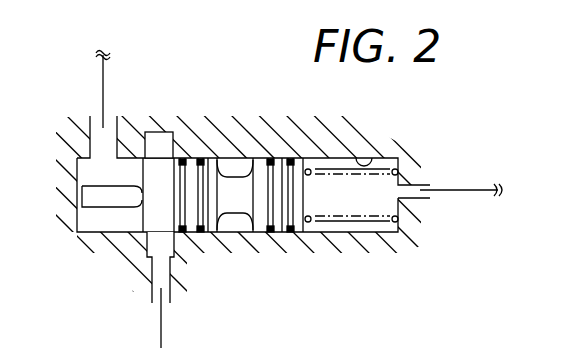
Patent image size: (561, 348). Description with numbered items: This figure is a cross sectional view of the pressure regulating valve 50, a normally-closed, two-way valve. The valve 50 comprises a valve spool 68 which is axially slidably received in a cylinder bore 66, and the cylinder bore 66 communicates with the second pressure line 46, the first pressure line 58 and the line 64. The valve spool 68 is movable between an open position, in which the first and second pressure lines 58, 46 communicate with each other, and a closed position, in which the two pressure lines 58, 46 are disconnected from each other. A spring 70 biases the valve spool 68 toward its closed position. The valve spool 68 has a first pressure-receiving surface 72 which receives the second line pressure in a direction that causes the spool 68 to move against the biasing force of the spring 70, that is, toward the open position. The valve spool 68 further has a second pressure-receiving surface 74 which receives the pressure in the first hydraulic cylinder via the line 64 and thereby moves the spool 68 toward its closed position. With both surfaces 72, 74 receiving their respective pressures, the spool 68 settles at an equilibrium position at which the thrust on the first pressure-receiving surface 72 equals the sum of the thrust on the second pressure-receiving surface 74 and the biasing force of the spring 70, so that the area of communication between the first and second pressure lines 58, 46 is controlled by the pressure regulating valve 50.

The second pressure line 46 is at (102, 80).
The pressure regulating valve 50 is at (274, 256).
The first pressure line 58 is at (161, 313).
The line 64 is at (463, 190).
The cylinder bore 66 is at (362, 156).
The valve spool 68 is at (240, 205).
The spring 70 is at (393, 222).
The first pressure-receiving surface 72 is at (142, 220).
The second pressure-receiving surface 74 is at (311, 233).